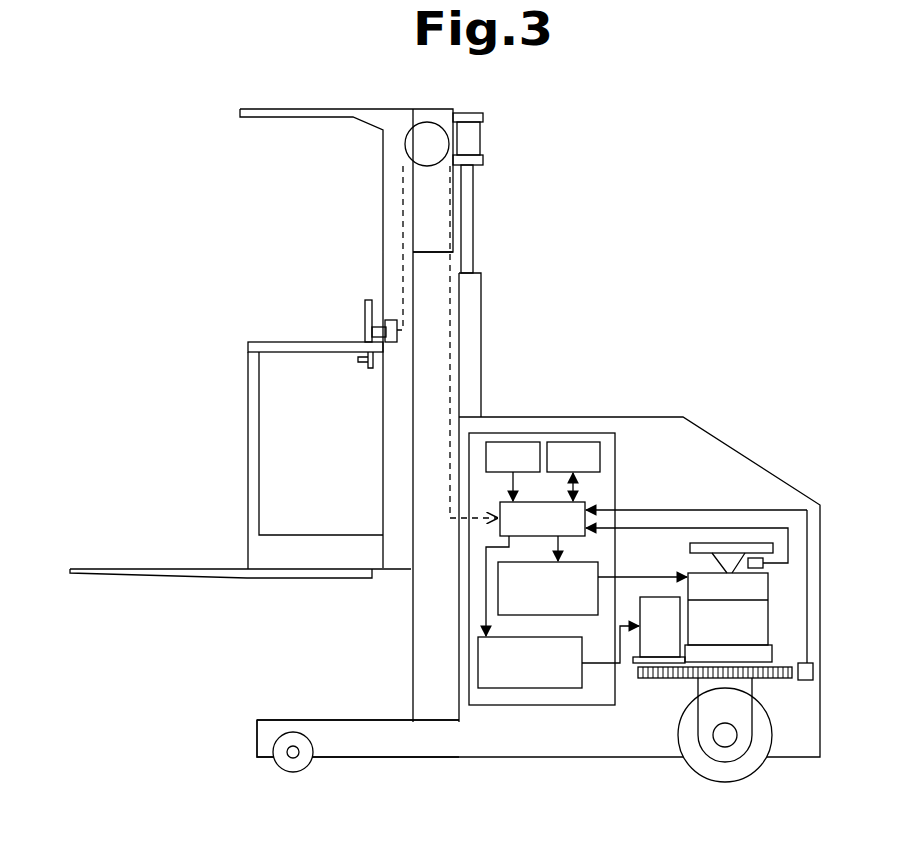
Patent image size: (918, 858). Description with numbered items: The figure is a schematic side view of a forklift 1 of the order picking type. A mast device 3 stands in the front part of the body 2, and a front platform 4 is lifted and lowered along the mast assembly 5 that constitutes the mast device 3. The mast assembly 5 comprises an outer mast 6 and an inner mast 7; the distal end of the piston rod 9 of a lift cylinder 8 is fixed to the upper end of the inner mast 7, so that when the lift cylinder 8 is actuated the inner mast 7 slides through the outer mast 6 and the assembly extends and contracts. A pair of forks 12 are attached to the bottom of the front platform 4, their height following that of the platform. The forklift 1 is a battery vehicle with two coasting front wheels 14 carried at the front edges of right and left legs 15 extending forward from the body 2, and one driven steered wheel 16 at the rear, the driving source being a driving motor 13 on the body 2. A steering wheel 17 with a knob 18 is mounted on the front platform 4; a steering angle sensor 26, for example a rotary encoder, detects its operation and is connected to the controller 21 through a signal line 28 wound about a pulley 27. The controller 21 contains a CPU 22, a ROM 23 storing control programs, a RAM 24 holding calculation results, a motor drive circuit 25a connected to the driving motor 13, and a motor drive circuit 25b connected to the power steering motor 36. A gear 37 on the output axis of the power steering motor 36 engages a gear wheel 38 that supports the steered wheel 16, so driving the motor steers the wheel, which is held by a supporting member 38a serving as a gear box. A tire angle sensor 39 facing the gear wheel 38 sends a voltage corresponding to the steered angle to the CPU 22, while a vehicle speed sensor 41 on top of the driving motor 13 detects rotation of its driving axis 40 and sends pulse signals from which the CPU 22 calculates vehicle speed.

The forklift 1 is at (183, 150).
The body 2 is at (688, 418).
The mast device 3 is at (481, 113).
The front platform 4 is at (248, 343).
The mast assembly 5 is at (520, 238).
The outer mast 6 is at (463, 292).
The inner mast 7 is at (443, 242).
The lift cylinder 8 is at (482, 345).
The piston rod 9 is at (474, 215).
The forks 12 is at (128, 578).
The driving motor 13 is at (768, 610).
The front wheels 14 is at (277, 762).
The legs 15 is at (336, 720).
The steered wheel 16 is at (752, 775).
The steering wheel 17 is at (365, 310).
The knob 18 is at (360, 366).
The controller 21 is at (493, 706).
The CPU 22 is at (588, 504).
The ROM 23 is at (516, 442).
The RAM 24 is at (578, 442).
The motor drive circuit 25a is at (598, 563).
The motor drive circuit 25b is at (560, 690).
The steering angle sensor 26 is at (391, 320).
The pulley 27 is at (427, 121).
The signal line 28 is at (400, 180).
The power steering motor 36 is at (638, 645).
The gear 37 is at (662, 673).
The gear wheel 38 is at (780, 680).
The supporting member 38a is at (757, 725).
The tire angle sensor 39 is at (808, 683).
The driving axis 40 is at (712, 562).
The vehicle speed sensor 41 is at (763, 563).